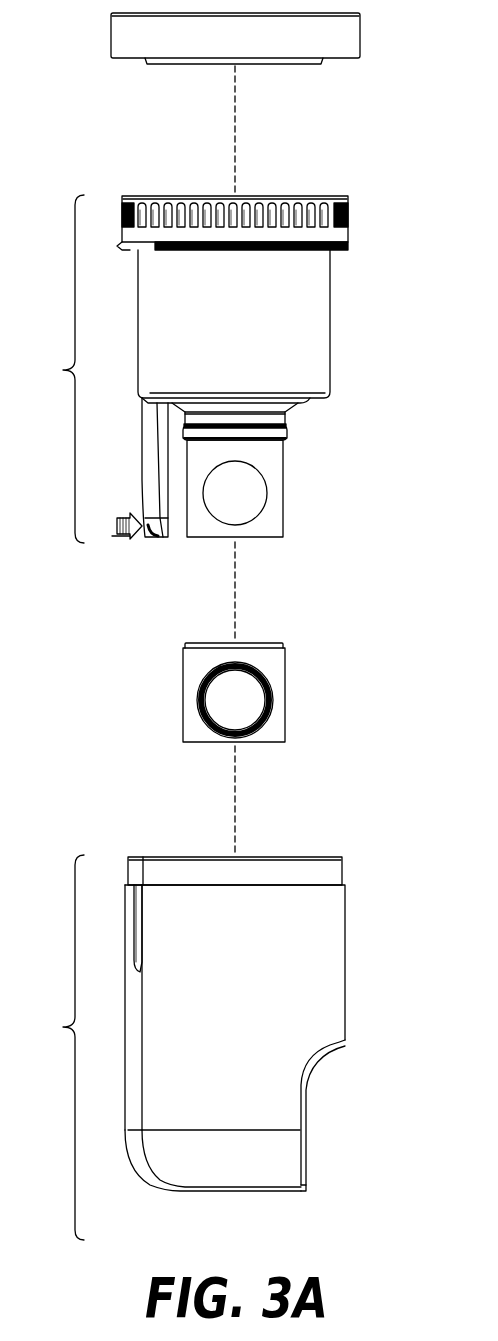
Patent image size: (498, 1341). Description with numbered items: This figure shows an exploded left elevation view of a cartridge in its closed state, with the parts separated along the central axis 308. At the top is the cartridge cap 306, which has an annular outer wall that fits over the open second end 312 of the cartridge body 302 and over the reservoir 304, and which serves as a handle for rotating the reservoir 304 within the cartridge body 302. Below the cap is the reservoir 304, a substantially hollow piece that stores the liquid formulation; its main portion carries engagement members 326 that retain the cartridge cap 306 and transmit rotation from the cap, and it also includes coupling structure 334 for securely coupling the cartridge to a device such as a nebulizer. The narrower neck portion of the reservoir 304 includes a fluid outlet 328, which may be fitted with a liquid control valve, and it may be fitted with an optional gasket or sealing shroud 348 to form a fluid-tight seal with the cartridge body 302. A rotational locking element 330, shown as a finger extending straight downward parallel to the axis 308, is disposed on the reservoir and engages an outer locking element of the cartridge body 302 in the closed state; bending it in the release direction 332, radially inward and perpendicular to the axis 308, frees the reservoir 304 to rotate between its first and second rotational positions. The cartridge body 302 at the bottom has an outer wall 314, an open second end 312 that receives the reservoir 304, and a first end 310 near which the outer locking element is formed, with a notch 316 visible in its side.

The cartridge body 302 is at (212, 1021).
The reservoir 304 is at (226, 369).
The cartridge cap 306 is at (118, 35).
The axis 308 is at (235, 123).
The first end 310 is at (290, 1192).
The open second end 312 is at (302, 857).
The outer wall 314 is at (330, 962).
The notch 316 is at (328, 1050).
The engagement members 326 is at (350, 212).
The fluid outlet 328 is at (330, 310).
The rotational locking element 330 is at (150, 440).
The release direction 332 is at (124, 514).
The coupling structure 334 is at (348, 243).
The gasket or sealing shroud 348 is at (278, 697).